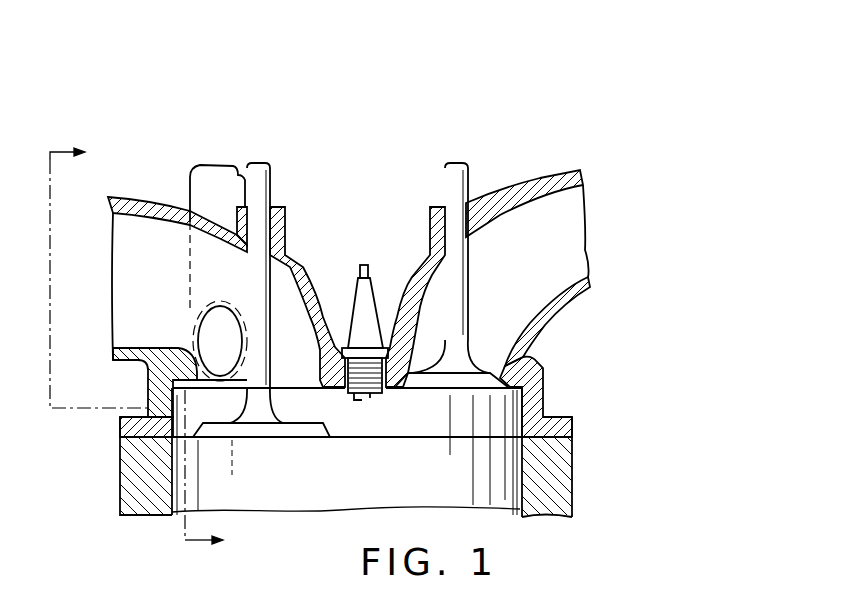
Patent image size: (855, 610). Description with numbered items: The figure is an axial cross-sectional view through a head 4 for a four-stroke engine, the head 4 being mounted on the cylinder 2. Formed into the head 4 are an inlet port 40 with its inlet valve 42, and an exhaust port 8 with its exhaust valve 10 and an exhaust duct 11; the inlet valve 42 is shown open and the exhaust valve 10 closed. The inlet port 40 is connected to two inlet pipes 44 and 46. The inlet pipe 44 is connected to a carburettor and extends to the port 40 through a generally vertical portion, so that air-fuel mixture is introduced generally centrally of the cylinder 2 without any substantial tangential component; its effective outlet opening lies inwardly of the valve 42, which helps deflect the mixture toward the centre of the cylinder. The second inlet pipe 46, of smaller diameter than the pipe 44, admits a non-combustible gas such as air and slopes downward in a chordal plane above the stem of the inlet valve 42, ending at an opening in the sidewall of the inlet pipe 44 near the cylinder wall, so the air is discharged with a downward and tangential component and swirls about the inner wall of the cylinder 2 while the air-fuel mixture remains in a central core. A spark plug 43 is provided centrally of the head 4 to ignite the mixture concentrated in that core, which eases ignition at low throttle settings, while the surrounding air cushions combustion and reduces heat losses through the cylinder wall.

The cylinder 2 is at (83, 498).
The head 4 is at (123, 430).
The exhaust port 8 is at (537, 358).
The exhaust valve 10 is at (427, 390).
The exhaust duct 11 is at (537, 213).
The inlet port 40 is at (290, 372).
The inlet valve 42 is at (275, 432).
The spark plug 43 is at (365, 305).
The inlet pipe 44 is at (141, 325).
The second inlet pipe 46 is at (203, 183).